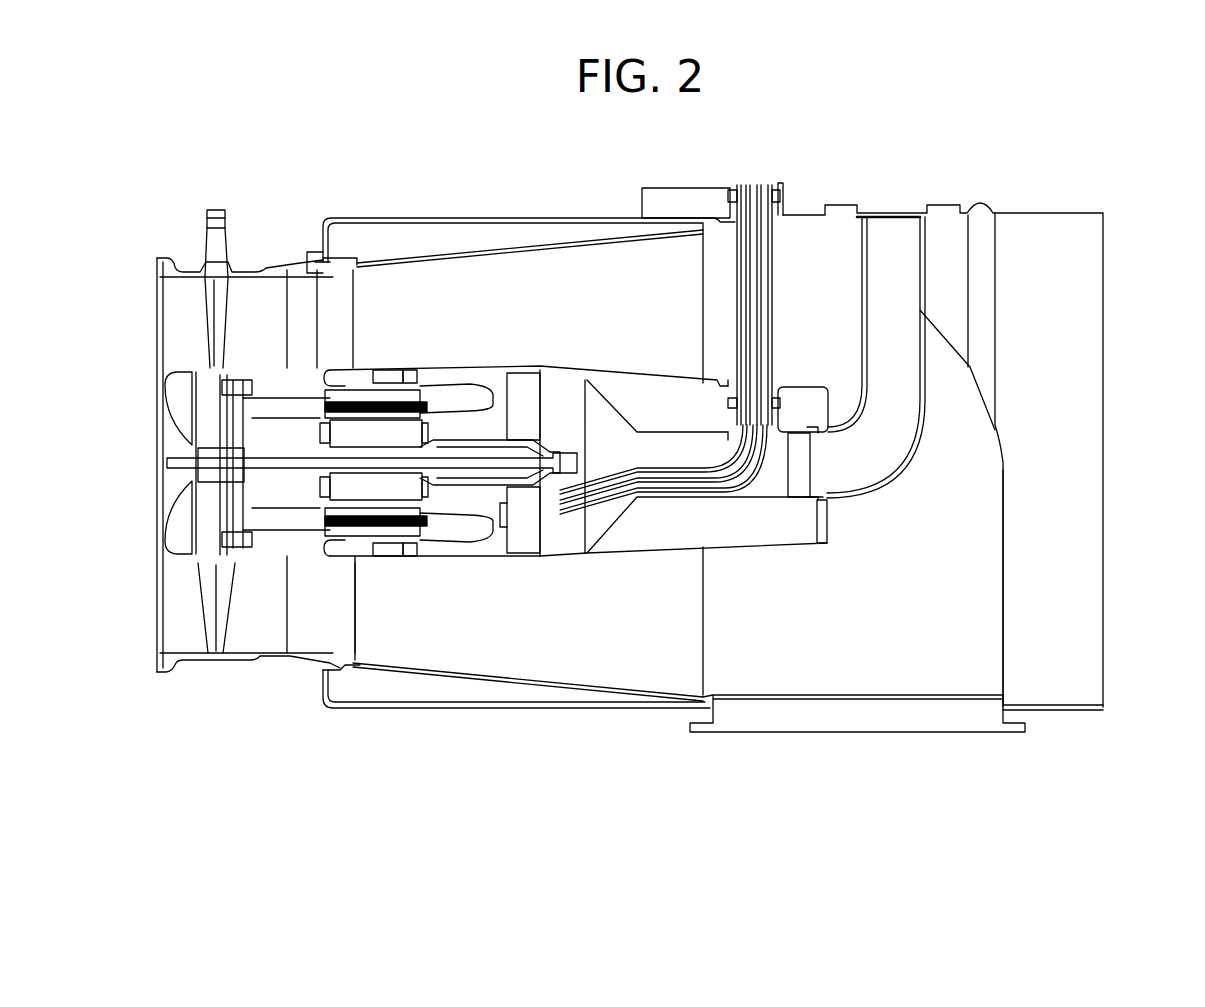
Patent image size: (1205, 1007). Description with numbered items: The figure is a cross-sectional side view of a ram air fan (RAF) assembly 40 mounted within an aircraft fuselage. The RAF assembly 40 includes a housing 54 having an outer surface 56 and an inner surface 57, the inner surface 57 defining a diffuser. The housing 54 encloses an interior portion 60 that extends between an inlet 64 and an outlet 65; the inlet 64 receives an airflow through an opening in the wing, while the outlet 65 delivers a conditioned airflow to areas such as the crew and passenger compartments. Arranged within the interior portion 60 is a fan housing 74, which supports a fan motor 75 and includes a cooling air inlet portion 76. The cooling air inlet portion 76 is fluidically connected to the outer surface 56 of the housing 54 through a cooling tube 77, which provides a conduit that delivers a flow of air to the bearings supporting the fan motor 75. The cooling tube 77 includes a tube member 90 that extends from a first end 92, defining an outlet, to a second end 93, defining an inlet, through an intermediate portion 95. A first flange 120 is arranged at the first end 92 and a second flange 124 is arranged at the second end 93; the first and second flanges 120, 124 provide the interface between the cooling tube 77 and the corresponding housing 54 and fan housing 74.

The ram air fan (RAF) assembly 40 is at (352, 154).
The housing 54 is at (549, 220).
The outer surface 56 is at (488, 217).
The inner surface 57 is at (387, 663).
The interior portion 60 is at (574, 655).
The inlet 64 is at (176, 282).
The outlet 65 is at (1097, 707).
The fan housing 74 is at (366, 576).
The fan motor 75 is at (428, 537).
The cooling air inlet portion 76 is at (795, 493).
The cooling tube 77 is at (930, 466).
The tube member 90 is at (925, 274).
The first end 92 is at (812, 436).
The second end 93 is at (872, 222).
The intermediate portion 95 is at (923, 391).
The first flange 120 is at (820, 545).
The second flange 124 is at (965, 210).